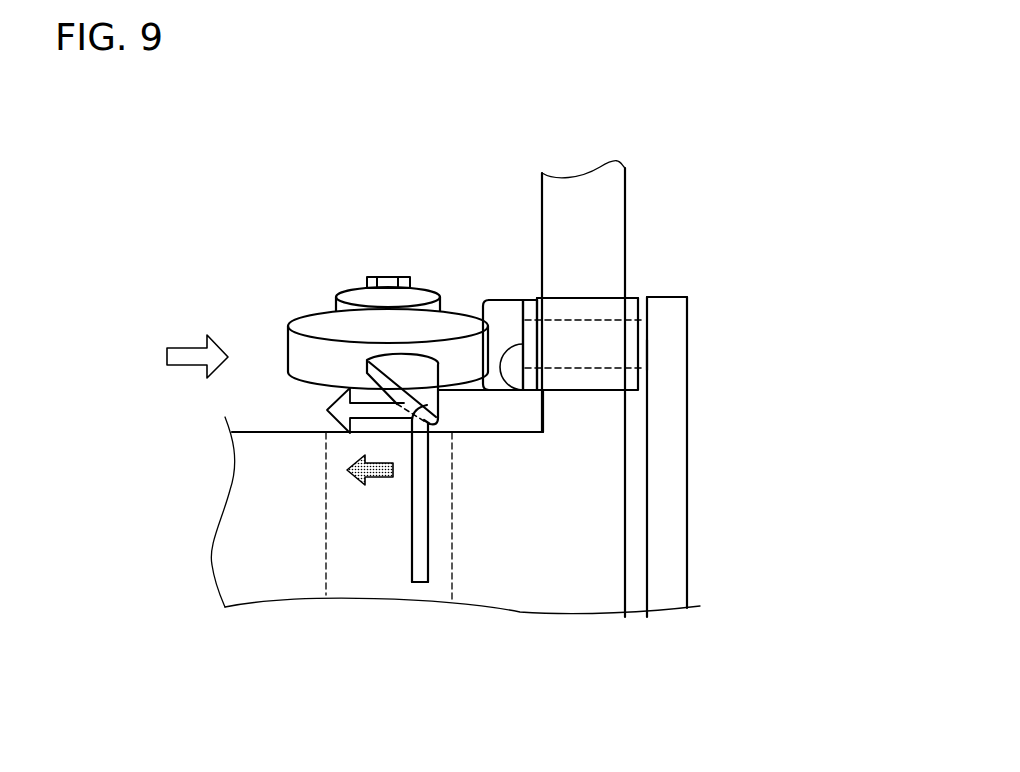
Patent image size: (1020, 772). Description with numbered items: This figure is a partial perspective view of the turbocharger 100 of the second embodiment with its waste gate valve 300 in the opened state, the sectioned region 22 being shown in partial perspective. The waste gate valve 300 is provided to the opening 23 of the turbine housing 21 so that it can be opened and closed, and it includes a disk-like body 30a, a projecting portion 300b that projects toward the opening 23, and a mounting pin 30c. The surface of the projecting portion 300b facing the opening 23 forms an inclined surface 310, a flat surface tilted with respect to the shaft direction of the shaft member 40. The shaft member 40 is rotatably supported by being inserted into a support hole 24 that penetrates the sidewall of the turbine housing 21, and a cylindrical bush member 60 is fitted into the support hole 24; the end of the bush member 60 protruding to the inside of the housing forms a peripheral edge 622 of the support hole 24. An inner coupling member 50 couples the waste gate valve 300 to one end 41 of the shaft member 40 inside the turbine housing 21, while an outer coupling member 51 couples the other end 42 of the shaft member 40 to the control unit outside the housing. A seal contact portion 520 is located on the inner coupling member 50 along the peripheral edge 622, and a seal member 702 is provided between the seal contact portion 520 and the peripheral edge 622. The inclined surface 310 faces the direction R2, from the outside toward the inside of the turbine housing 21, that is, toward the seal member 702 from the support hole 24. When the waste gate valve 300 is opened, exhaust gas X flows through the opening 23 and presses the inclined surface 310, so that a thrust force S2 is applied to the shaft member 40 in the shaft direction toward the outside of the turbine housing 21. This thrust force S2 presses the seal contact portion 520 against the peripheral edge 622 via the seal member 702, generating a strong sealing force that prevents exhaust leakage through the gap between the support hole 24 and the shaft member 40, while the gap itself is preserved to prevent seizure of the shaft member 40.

The turbocharger 100 is at (712, 160).
The pressing unit 22 is at (442, 160).
The turbine housing 21 is at (607, 175).
The seal member 702 is at (533, 300).
The peripheral edge 622 is at (553, 309).
The waste gate valve 300 is at (385, 183).
The body 30a is at (305, 340).
The projecting portion 300b is at (405, 370).
The mounting pin 30c is at (387, 277).
The seal contact portion 520 is at (497, 306).
The inner coupling member 50 is at (487, 302).
The support hole 24 is at (602, 297).
The bush member 60 is at (627, 305).
The shaft member 40 is at (603, 340).
The other end 42 is at (647, 353).
The one end 41 is at (472, 388).
The inclined surface 310 is at (440, 391).
The outer coupling member 51 is at (675, 560).
The opening 23 is at (380, 552).
The direction R2 is at (380, 482).
The thrust force S2 is at (192, 357).
The exhaust gas X is at (418, 572).